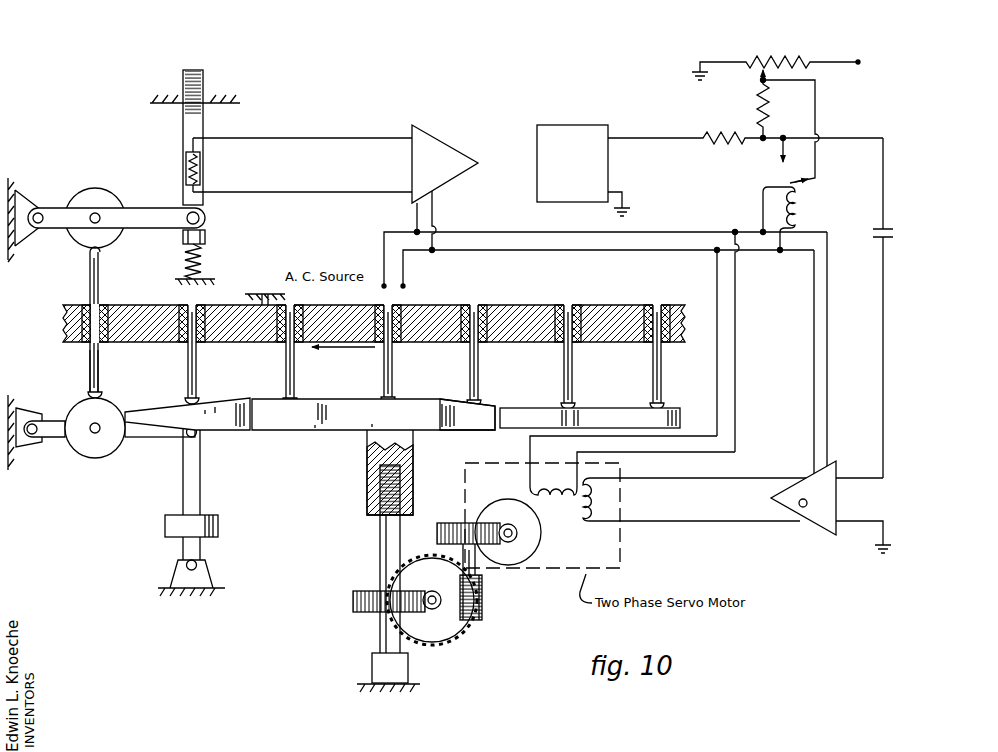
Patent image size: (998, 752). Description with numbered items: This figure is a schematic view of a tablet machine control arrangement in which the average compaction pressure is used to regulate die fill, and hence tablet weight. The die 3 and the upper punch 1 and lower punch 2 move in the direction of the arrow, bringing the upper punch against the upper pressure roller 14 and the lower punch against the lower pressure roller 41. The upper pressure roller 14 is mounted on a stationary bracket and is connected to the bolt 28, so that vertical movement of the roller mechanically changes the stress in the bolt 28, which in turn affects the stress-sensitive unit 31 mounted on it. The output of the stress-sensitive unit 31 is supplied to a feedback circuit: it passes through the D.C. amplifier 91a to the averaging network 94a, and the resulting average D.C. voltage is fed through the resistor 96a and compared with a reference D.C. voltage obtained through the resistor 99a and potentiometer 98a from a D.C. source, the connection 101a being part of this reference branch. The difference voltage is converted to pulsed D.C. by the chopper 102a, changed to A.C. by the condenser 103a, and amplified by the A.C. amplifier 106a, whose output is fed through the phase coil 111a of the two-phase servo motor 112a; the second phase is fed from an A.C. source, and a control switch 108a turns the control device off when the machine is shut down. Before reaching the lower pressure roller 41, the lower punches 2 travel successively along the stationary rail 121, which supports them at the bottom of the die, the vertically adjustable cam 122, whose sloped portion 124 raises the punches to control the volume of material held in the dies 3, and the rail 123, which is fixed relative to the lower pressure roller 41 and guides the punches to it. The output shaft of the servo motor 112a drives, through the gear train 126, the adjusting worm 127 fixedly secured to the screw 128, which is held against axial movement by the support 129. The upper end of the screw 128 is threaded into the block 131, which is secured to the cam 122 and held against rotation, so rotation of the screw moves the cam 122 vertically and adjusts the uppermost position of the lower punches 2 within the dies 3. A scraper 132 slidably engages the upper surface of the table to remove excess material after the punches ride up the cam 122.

The upper punch 1 is at (90, 279).
The lower punch 2 is at (90, 369).
The die 3 is at (105, 305).
The upper pressure roller 14 is at (100, 196).
The bolt 28 is at (183, 134).
The stress-sensitive unit 31 is at (186, 170).
The lower pressure roller 41 is at (100, 450).
The D.C. amplifier 91a is at (428, 137).
The averaging network 94a is at (558, 125).
The resistor 96a is at (728, 134).
The potentiometer 98a is at (796, 56).
The resistor 99a is at (757, 104).
The conductor 101a is at (816, 112).
The chopper 102a is at (803, 205).
The condenser 103a is at (893, 233).
The A.C. amplifier 106a is at (830, 540).
The control switch 108a is at (802, 508).
The phase coil 111a is at (606, 480).
The two-phase servo motor 112a is at (528, 568).
The rail 121 is at (620, 397).
The cam 122 is at (316, 399).
The rail 123 is at (218, 396).
The sloped portion 124 is at (446, 400).
The gear train 126 is at (490, 612).
The adjusting worm 127 is at (353, 605).
The screw 128 is at (385, 540).
The support 129 is at (372, 669).
The block 131 is at (408, 445).
The scraper 132 is at (272, 303).